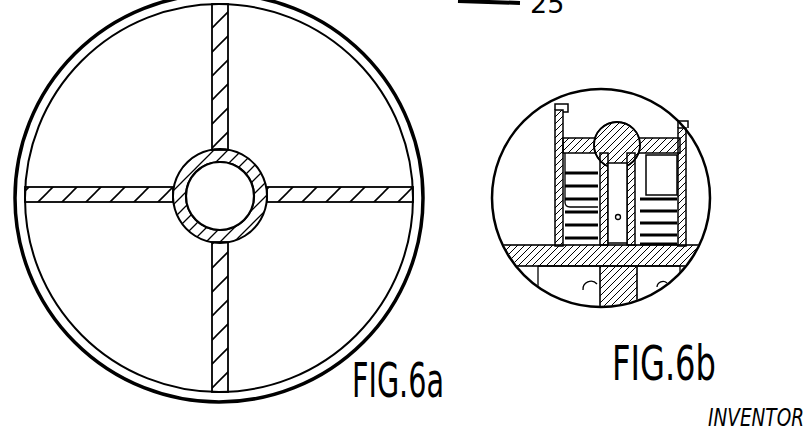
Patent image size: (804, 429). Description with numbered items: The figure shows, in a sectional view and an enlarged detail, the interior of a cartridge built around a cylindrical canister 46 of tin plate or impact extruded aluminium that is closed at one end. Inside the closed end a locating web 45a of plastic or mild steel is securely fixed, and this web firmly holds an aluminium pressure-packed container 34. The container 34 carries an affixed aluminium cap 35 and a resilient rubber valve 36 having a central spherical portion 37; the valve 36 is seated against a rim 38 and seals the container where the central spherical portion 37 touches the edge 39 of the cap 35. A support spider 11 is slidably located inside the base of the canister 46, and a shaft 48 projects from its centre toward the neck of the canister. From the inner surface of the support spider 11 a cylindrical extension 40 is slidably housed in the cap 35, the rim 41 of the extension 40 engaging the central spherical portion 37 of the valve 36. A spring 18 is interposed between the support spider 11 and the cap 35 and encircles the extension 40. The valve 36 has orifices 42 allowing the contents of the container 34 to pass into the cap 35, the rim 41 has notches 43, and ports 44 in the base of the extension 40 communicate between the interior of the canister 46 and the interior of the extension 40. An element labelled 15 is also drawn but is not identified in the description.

In FIG. 6A, the pressure-packed container 34 is at (187, 177).
In FIG. 6B, the pressure-packed container 34 is at (566, 104).
In FIG. 6A, the locating web 45a is at (315, 193).
In FIG. 6A, the canister 46 is at (405, 282).
In FIG. 6B, the orifices 42 is at (560, 137).
In FIG. 6B, the central spherical portion 37 is at (632, 128).
In FIG. 6B, the rim 38 is at (679, 124).
In FIG. 6B, the resilient rubber valve 36 is at (684, 145).
In FIG. 6B, the edge 39 is at (598, 155).
In FIG. 6B, the rim 41 is at (563, 177).
In FIG. 6B, the cylindrical extension 40 is at (562, 212).
In FIG. 6B, the ports 44 is at (562, 230).
In FIG. 6B, the notches 43 is at (653, 170).
In FIG. 6B, the cap 35 is at (692, 183).
In FIG. 6B, the spring 18 is at (680, 218).
In FIG. 6B, the support spider 11 is at (685, 257).
In FIG. 6B, the recess 15 is at (590, 285).
In FIG. 6B, the shaft 48 is at (652, 285).